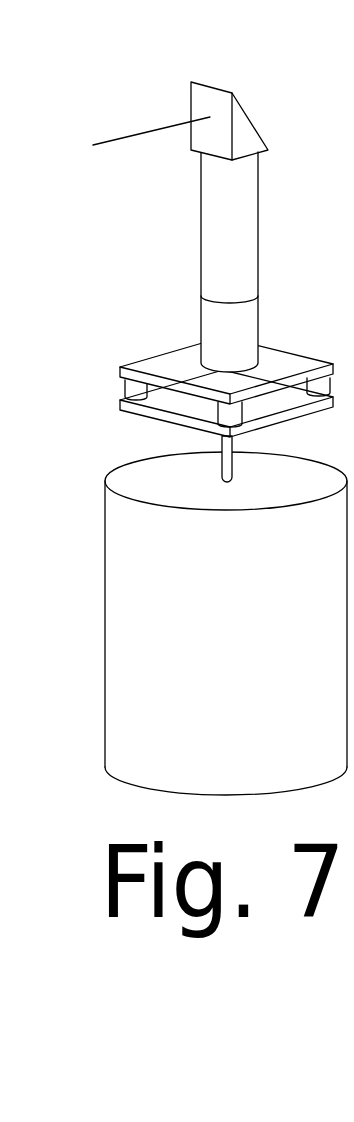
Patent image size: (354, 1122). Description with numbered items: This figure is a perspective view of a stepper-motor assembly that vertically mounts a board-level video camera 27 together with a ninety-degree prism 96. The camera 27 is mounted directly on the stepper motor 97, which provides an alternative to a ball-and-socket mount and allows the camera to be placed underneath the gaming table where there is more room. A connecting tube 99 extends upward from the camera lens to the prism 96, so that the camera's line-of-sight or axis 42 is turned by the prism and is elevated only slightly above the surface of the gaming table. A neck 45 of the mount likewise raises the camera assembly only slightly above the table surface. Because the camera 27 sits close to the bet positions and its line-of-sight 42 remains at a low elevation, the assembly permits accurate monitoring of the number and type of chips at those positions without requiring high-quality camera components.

The line-of-sight or axis 42 is at (116, 99).
The prism 96 is at (266, 111).
The connecting tube 99 is at (177, 262).
The video camera 27 is at (211, 361).
The neck 45 is at (166, 450).
The cylindrical base 97 is at (183, 623).